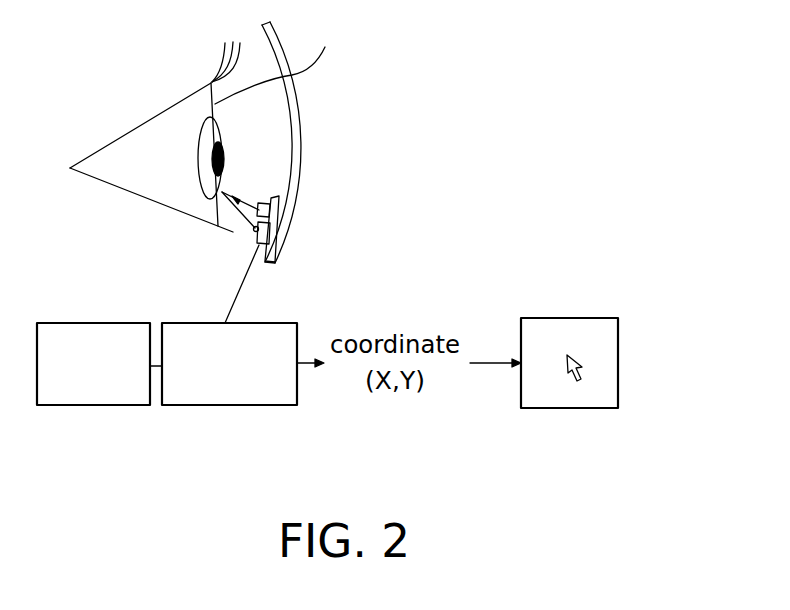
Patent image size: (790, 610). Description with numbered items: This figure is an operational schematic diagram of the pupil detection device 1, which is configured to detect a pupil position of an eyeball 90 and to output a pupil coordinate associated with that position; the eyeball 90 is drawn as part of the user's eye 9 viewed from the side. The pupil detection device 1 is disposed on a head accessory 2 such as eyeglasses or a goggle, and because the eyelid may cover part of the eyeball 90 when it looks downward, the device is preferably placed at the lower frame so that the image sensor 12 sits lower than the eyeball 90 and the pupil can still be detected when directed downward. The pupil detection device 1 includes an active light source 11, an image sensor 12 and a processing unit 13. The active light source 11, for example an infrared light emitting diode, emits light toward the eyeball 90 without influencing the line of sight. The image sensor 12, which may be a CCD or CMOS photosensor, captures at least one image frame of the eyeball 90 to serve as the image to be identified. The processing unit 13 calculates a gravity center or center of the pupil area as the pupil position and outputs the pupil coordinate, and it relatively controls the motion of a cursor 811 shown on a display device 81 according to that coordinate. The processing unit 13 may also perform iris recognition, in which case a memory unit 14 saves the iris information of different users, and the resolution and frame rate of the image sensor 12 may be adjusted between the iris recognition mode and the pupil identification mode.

The pupil detection device 1 is at (281, 303).
The head accessory 2 is at (302, 122).
The eye 9 is at (157, 115).
The eyeball 90 is at (280, 63).
The active light source 11 is at (255, 237).
The image sensor 12 is at (268, 207).
The processing unit 13 is at (229, 406).
The memory unit 14 is at (112, 322).
The display device 81 is at (618, 348).
The cursor 811 is at (576, 354).